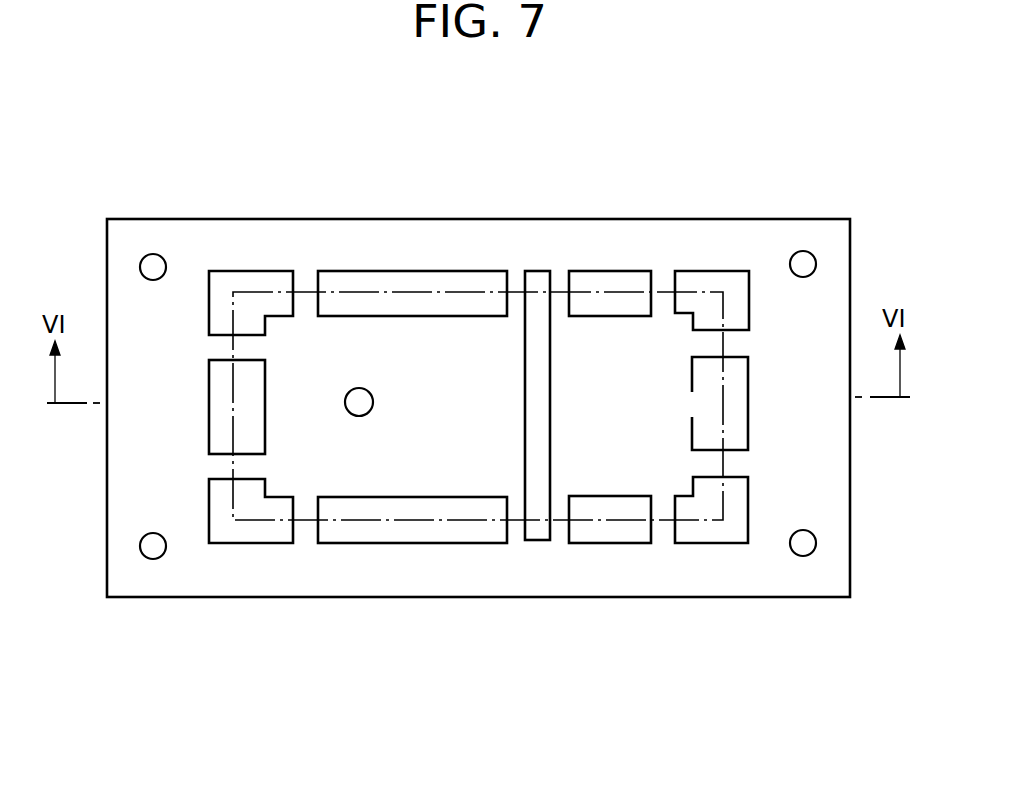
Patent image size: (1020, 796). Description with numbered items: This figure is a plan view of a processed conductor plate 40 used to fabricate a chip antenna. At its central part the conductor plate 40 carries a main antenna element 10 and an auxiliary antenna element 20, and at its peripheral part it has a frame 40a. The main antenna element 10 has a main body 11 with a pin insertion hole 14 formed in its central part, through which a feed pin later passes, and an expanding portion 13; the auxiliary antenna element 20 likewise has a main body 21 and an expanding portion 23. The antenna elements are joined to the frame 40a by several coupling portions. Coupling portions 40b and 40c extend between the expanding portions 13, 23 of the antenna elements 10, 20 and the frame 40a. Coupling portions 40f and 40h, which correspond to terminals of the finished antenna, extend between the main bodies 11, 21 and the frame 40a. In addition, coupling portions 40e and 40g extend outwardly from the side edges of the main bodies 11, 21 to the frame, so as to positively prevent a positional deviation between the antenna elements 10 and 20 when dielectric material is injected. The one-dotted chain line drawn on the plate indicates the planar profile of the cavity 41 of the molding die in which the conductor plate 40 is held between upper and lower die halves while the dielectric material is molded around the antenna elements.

The main antenna element 10 is at (470, 677).
The main body 11 is at (382, 467).
The expanding portion 13 is at (512, 504).
The pin insertion hole 14 is at (368, 394).
The auxiliary antenna element 20 is at (677, 672).
The main body 21 is at (623, 460).
The expanding portion 23 is at (563, 505).
The processed conductor plate 40 is at (728, 218).
The frame 40a is at (445, 242).
The coupling portion 40b is at (514, 278).
The coupling portion 40c is at (560, 278).
The coupling portion 40e is at (307, 280).
The coupling portion 40f is at (220, 347).
The coupling portion 40g is at (664, 278).
The coupling portion 40h is at (733, 344).
The cavity 41 is at (395, 292).